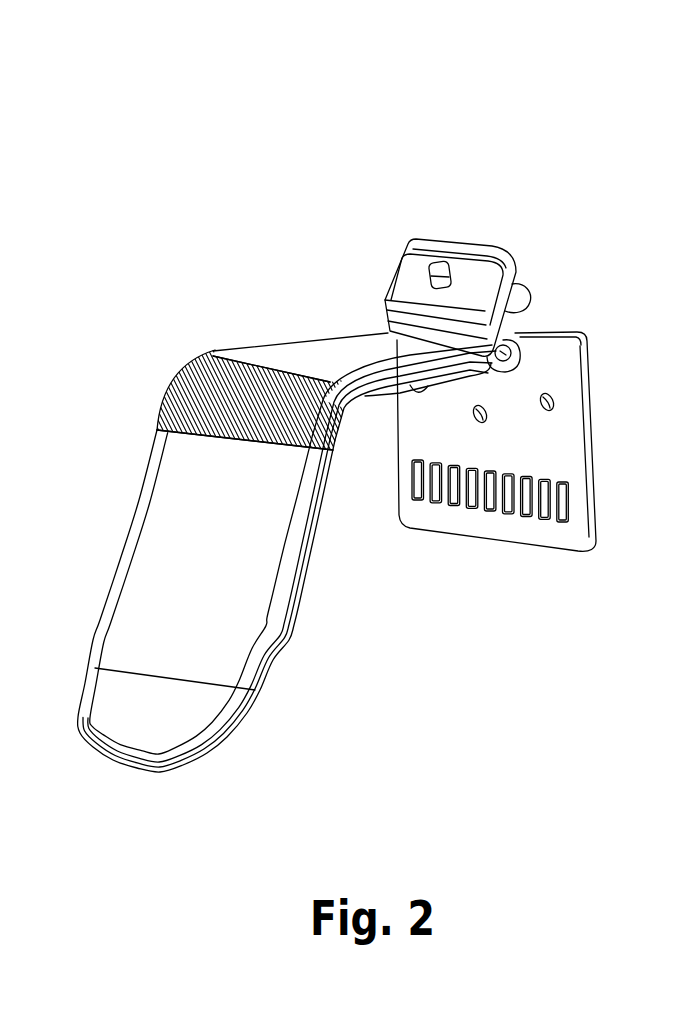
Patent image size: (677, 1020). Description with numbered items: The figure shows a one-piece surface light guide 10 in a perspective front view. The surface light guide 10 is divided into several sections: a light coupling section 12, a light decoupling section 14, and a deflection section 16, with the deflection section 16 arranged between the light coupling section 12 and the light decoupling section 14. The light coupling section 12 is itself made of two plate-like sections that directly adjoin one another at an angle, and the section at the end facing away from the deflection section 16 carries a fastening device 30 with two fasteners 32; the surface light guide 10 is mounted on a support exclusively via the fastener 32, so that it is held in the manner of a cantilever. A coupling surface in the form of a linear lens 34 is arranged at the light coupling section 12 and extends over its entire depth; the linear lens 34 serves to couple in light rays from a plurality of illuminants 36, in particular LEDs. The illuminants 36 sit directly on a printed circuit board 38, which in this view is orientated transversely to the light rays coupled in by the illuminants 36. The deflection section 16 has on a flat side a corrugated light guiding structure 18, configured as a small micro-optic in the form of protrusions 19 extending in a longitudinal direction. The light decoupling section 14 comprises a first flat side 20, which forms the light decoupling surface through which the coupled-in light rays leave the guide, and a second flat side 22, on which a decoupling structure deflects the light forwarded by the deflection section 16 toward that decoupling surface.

The surface light guide 10 is at (483, 185).
The light coupling section 12 is at (425, 227).
The light decoupling section 14 is at (153, 347).
The deflection section 16 is at (228, 324).
The light guiding structure 18 is at (293, 421).
The protrusions 19 is at (220, 386).
The first flat side 20 is at (158, 652).
The second flat side 22 is at (303, 589).
The fastening device 30 is at (510, 219).
The fastener 32 is at (531, 290).
The linear lens 34 is at (482, 372).
The illuminants 36 is at (511, 347).
The printed circuit board 38 is at (553, 453).